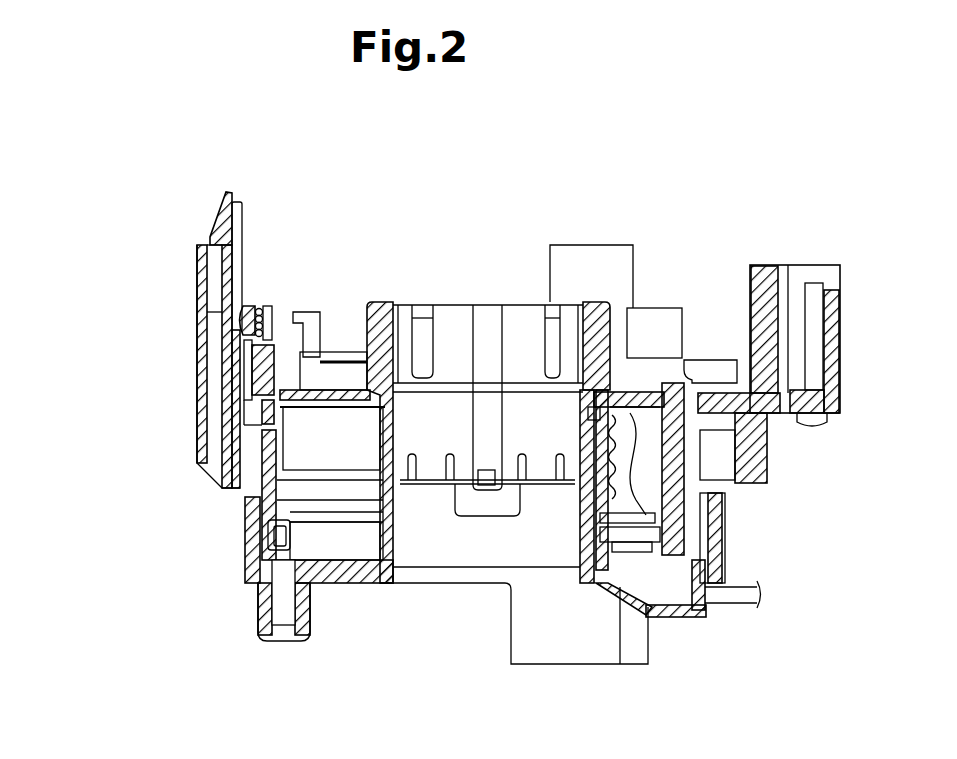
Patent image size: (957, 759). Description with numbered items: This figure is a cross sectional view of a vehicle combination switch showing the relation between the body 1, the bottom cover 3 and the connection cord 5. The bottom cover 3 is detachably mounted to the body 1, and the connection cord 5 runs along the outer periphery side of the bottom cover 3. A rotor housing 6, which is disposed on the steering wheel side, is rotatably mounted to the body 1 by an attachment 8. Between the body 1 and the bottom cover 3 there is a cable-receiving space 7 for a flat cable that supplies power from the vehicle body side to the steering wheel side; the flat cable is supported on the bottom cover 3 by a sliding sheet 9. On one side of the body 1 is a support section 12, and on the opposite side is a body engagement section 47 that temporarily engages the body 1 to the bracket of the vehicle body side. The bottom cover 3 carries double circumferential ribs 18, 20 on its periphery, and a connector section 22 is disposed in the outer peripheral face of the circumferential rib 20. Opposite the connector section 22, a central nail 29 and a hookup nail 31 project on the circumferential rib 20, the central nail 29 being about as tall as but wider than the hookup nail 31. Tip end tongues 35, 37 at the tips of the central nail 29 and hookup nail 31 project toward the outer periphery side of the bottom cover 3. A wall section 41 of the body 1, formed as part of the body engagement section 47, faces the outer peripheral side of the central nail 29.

The body 1 is at (194, 349).
The bottom cover 3 is at (372, 300).
The connection cord 5 is at (247, 338).
The rotor housing 6 is at (377, 585).
The cable-receiving space 7 is at (313, 445).
The attachment 8 is at (514, 300).
The sliding sheet 9 is at (263, 493).
The support section 12 is at (790, 425).
The circumferential rib 18 is at (270, 415).
The circumferential rib 20 is at (262, 388).
The connector section 22 is at (806, 263).
The central nail 29 is at (292, 327).
The hookup nail 31 is at (342, 337).
The tip end tongue 35 is at (247, 317).
The tip end tongue 37 is at (325, 330).
The wall section 41 is at (262, 335).
The body engagement section 47 is at (200, 243).